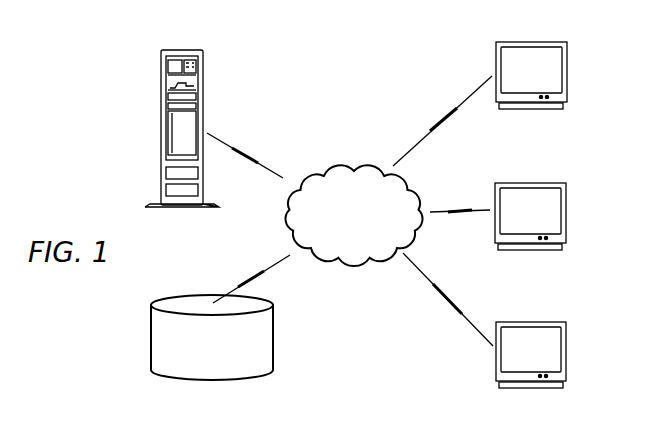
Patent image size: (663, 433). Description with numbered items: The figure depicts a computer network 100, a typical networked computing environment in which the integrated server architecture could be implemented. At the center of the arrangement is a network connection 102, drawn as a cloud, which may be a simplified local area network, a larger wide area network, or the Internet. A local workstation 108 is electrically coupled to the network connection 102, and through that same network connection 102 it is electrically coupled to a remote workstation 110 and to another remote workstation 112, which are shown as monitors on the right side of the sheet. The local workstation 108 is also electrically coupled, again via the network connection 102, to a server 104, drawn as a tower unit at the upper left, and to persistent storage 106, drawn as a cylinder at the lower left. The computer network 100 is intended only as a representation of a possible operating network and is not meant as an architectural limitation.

The computer network 100 is at (373, 76).
The network connection 102 is at (372, 227).
The server 104 is at (161, 132).
The persistent storage 106 is at (151, 337).
The local workstation 108 is at (567, 72).
The remote workstation 110 is at (566, 214).
The remote workstation 112 is at (566, 350).